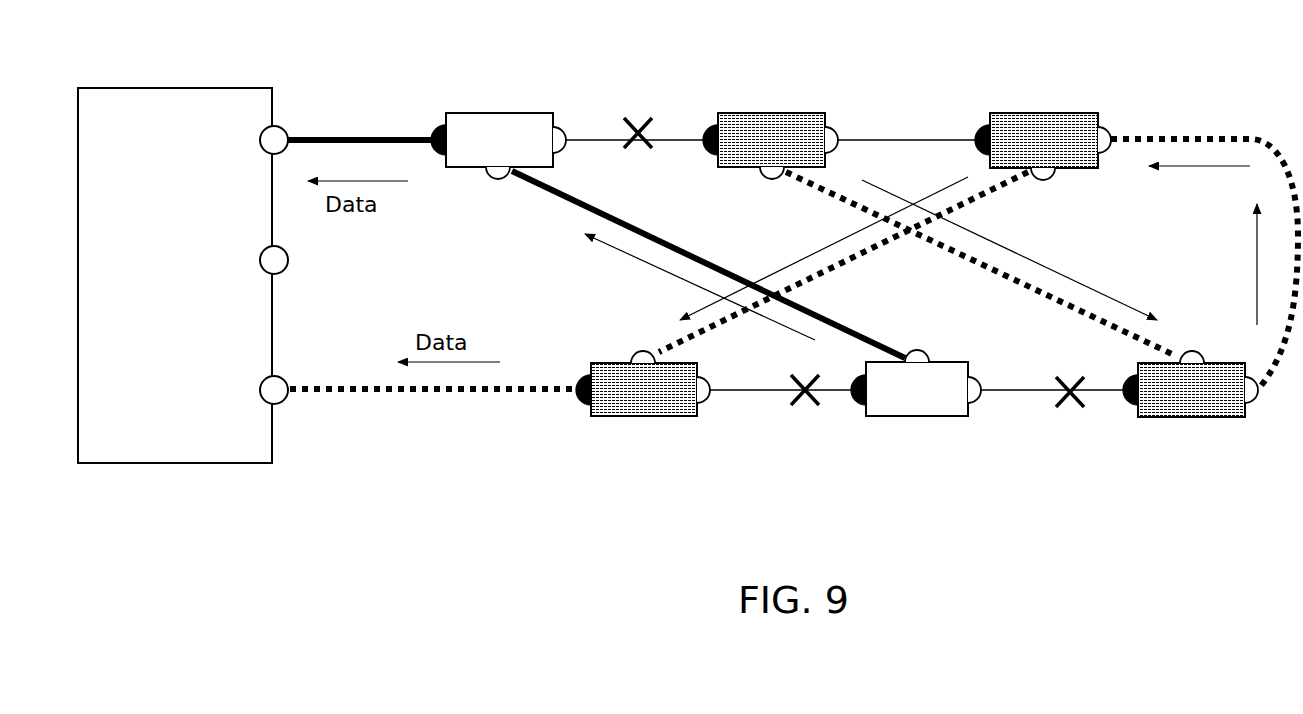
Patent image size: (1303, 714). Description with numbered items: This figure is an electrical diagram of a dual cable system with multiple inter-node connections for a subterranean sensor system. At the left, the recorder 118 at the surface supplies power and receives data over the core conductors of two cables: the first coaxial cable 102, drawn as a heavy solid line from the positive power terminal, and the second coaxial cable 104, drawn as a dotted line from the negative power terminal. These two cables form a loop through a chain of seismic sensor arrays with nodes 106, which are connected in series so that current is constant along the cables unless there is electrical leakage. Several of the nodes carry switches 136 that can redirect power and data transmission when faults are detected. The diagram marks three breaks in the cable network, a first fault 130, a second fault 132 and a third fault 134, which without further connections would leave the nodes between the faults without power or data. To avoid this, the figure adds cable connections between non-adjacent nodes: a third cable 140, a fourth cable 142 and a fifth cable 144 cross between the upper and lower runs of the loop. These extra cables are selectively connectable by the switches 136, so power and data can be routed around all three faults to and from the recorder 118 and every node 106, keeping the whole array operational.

The first coaxial cable 102 is at (390, 106).
The second coaxial cable 104 is at (456, 450).
The seismic sensor array with node 106 is at (637, 418).
The recorder 118 is at (194, 294).
The first fault 130 is at (800, 415).
The second fault 132 is at (638, 117).
The third fault 134 is at (1072, 415).
The switch 136 is at (704, 317).
The third cable 140 is at (673, 243).
The fourth cable 142 is at (850, 263).
The fifth cable 144 is at (988, 266).